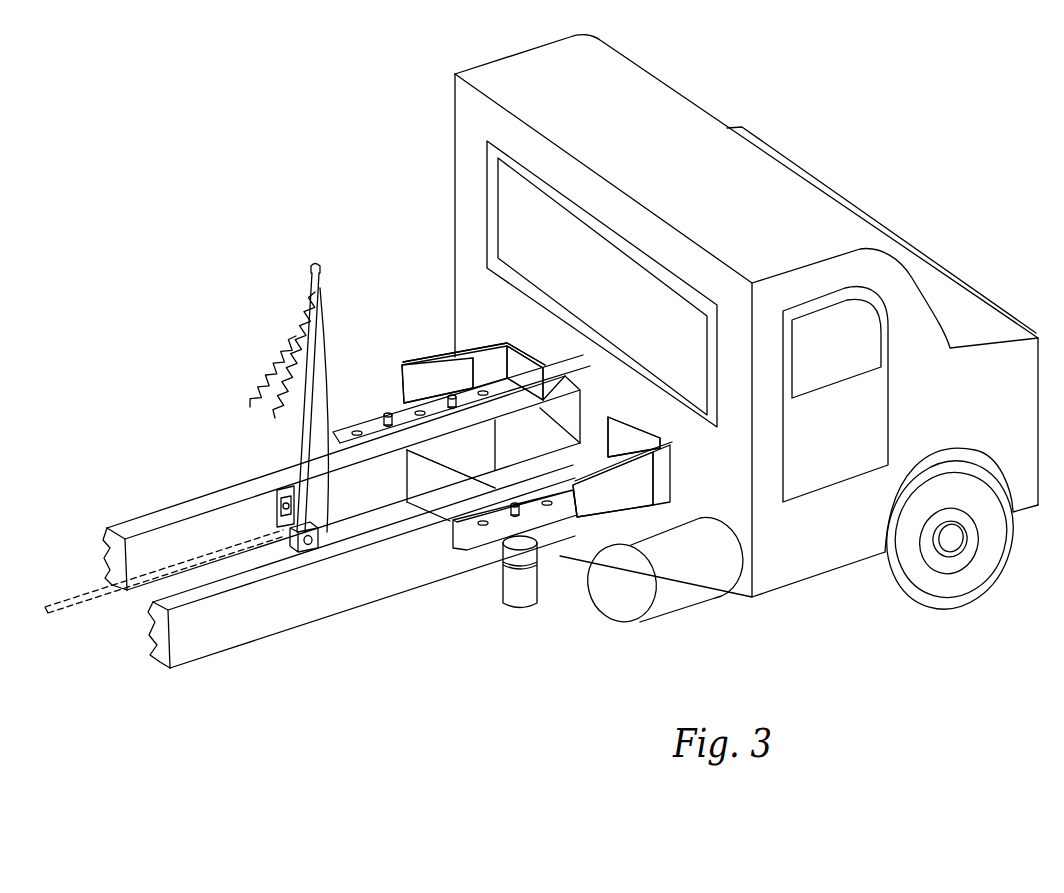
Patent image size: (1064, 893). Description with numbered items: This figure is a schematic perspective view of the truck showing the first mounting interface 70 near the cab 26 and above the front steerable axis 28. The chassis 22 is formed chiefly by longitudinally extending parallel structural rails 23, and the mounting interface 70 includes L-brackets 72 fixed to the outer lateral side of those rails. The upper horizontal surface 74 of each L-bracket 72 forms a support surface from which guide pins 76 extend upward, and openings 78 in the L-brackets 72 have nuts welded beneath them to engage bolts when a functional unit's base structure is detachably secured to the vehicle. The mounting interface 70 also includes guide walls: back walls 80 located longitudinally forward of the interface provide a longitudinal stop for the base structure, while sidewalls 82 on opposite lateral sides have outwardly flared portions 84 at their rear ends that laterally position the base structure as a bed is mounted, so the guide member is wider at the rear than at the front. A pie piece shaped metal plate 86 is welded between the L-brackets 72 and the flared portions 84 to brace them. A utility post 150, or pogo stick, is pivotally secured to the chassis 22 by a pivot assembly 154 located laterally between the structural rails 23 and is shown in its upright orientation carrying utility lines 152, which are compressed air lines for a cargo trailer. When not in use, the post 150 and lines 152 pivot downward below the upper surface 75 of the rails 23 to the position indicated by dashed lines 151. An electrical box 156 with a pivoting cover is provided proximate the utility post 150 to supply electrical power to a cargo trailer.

The chassis 22 is at (223, 648).
The structural rails 23 is at (140, 518).
The cab 26 is at (923, 315).
The front steerable axis 28 is at (953, 545).
The mounting interface 70 is at (404, 316).
The L-brackets 72 is at (360, 445).
The upper horizontal surface 74 is at (375, 430).
The upper surface 75 is at (510, 407).
The guide pins 76 is at (449, 397).
The openings 78 is at (357, 431).
The back walls 80 is at (527, 373).
The sidewalls 82 is at (472, 360).
The outwardly flared portions 84 is at (413, 378).
The pie piece shaped metal plate 86 is at (400, 360).
The utility post 150 is at (305, 382).
The dashed lines 151 is at (77, 605).
The utility lines 152 is at (288, 328).
The pivot assembly 154 is at (322, 548).
The electrical box 156 is at (252, 537).